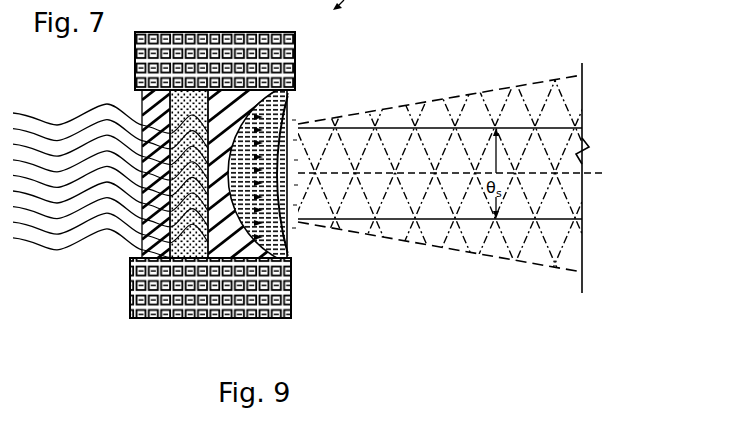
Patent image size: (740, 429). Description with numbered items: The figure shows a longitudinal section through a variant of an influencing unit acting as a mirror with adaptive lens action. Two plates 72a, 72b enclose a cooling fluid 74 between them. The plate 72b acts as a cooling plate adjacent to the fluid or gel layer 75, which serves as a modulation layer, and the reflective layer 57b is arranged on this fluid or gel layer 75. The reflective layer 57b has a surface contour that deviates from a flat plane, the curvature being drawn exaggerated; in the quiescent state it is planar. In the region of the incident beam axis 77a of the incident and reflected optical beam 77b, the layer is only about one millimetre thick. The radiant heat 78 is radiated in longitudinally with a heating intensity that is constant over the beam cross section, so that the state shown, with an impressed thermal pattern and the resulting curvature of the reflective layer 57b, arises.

The plate 72a is at (156, 90).
The cooling fluid 74 is at (192, 90).
The plate 72b is at (227, 90).
The fluid or gel layer 75 is at (297, 99).
The reflective layer 57b is at (293, 247).
The incident beam axis 77a is at (588, 170).
The incident and reflected optical beam 77b is at (458, 205).
The radiant heat 78 is at (53, 233).